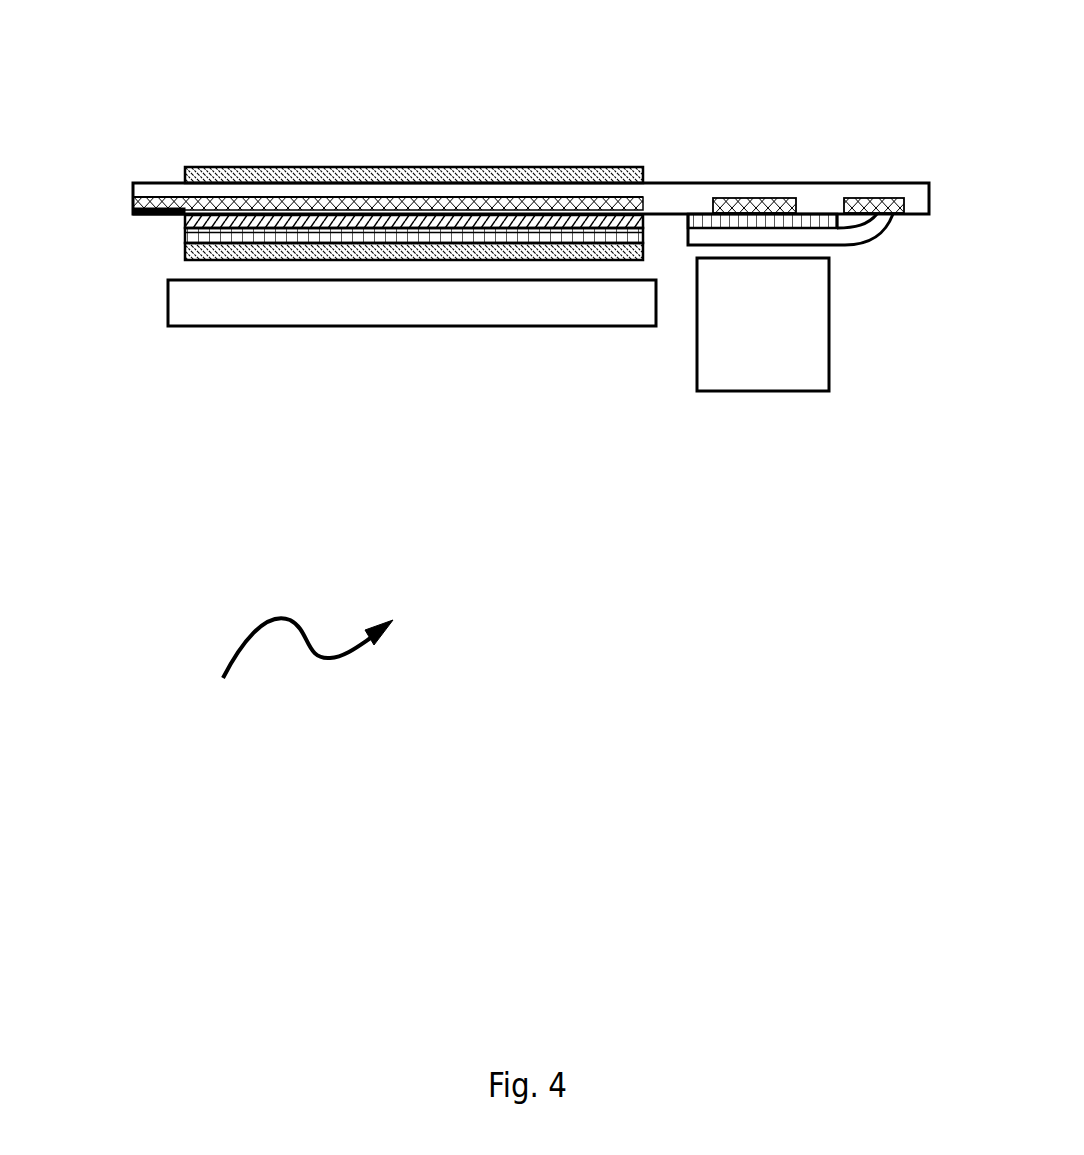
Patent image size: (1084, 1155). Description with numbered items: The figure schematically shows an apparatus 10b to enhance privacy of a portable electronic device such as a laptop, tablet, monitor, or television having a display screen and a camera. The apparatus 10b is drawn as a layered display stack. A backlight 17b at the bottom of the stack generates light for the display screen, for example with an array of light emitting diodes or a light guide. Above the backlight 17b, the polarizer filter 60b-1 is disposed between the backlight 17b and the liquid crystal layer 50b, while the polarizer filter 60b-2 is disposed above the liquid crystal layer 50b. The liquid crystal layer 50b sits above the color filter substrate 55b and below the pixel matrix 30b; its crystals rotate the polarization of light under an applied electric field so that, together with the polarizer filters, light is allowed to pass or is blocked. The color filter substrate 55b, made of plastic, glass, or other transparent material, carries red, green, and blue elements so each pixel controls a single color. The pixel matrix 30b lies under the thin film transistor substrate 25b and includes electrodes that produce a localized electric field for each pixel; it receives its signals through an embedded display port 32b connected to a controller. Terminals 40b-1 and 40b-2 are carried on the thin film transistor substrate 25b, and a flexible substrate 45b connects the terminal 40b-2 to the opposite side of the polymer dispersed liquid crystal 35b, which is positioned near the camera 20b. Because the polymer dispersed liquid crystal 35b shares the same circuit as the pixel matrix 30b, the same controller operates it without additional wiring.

The apparatus to enhance privacy of a portable electronic device 10b is at (290, 669).
The backlight 17b is at (394, 315).
The camera 20b is at (744, 338).
The thin film transistor substrate 25b is at (812, 190).
The pixel matrix 30b is at (134, 202).
The embedded display port 32b is at (133, 213).
The polymer dispersed liquid crystal 35b is at (692, 220).
The terminal 40b-1 is at (748, 207).
The terminal 40b-2 is at (875, 210).
The flexible substrate 45b is at (847, 237).
The liquid crystal layer 50b is at (193, 222).
The color filter substrate 55b is at (193, 237).
The polarizer filter 60b-1 is at (193, 252).
The polarizer filter 60b-2 is at (190, 177).